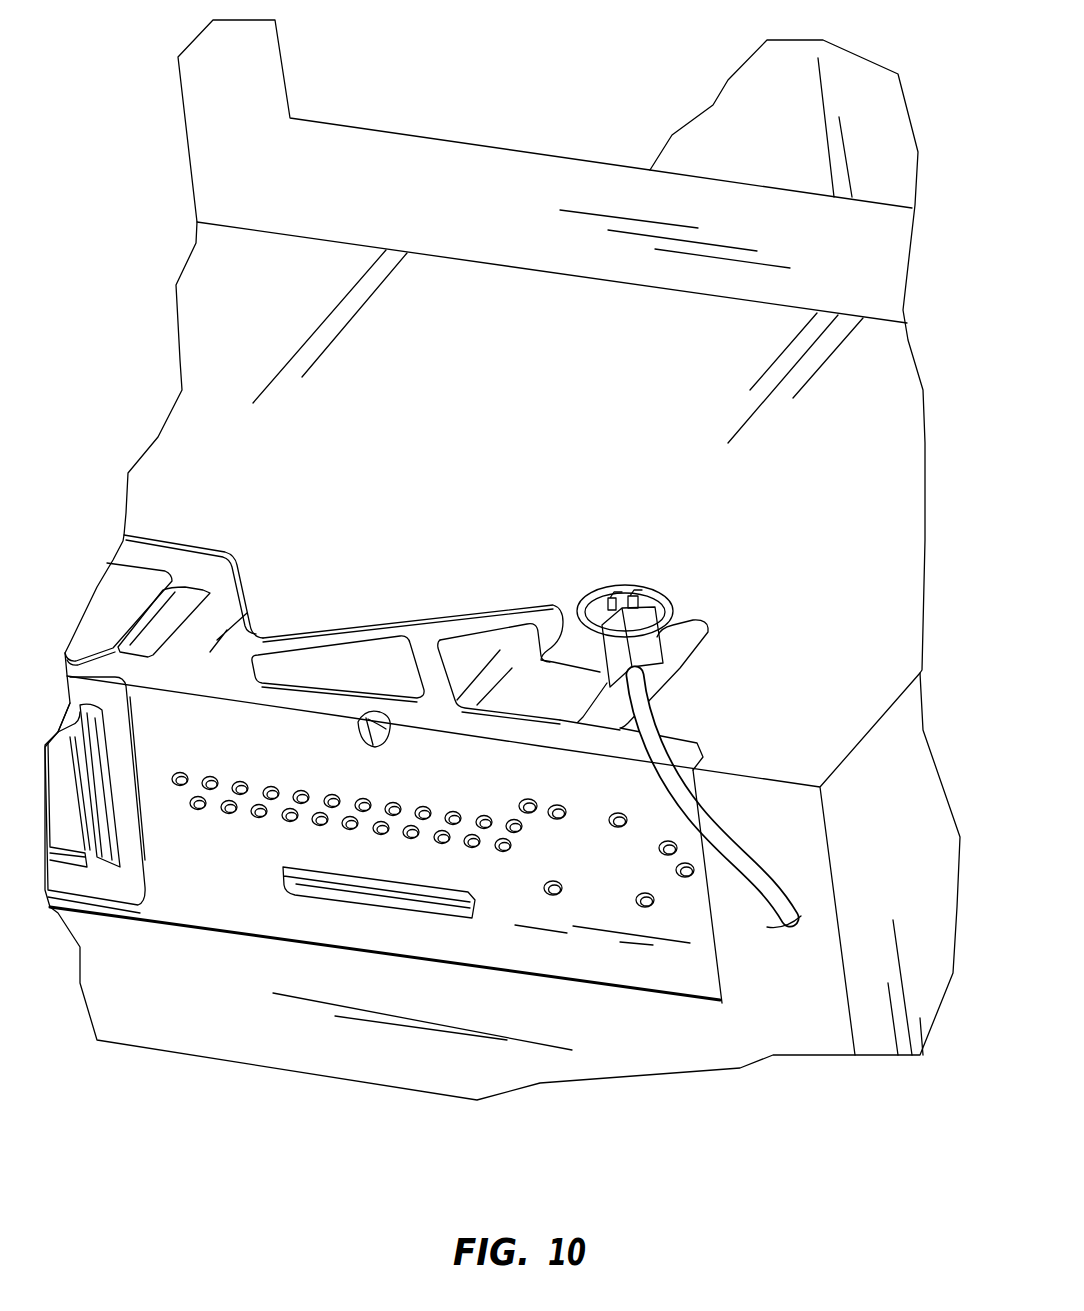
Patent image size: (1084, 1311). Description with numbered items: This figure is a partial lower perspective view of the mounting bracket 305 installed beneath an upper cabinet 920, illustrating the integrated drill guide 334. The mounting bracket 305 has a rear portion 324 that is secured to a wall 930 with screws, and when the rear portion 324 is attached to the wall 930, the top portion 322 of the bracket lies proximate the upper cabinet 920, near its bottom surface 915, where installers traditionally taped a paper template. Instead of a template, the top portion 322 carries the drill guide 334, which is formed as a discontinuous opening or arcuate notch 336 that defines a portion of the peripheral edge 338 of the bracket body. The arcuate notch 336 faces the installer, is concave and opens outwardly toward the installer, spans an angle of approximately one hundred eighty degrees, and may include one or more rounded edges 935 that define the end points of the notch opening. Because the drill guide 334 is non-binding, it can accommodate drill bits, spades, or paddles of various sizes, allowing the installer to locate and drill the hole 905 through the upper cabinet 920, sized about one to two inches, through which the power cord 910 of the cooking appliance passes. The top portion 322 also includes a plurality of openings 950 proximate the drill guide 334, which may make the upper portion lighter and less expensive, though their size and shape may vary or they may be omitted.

The upper cabinet 920 is at (432, 104).
The bottom surface 915 is at (445, 405).
The mounting bracket 305 is at (195, 901).
The top portion 322 is at (227, 630).
The rear portion 324 is at (598, 957).
The drill guide 334 is at (513, 598).
The arcuate notch 336 is at (680, 617).
The peripheral edge 338 is at (558, 663).
The hole 905 is at (653, 603).
The power cord 910 is at (683, 612).
The wall 930 is at (772, 1015).
The rounded edges 935 is at (560, 620).
The openings 950 is at (377, 653).